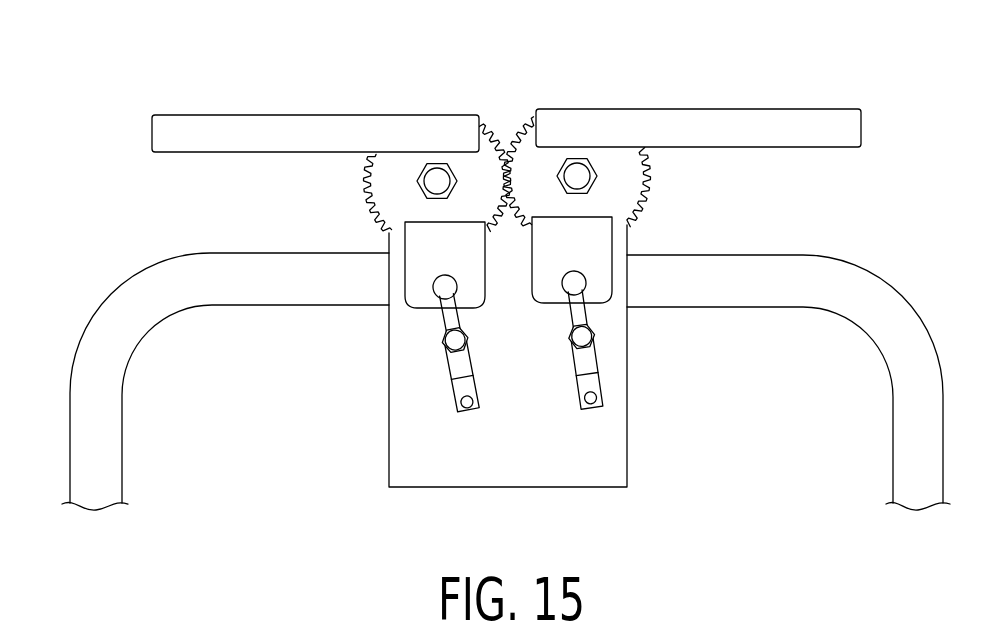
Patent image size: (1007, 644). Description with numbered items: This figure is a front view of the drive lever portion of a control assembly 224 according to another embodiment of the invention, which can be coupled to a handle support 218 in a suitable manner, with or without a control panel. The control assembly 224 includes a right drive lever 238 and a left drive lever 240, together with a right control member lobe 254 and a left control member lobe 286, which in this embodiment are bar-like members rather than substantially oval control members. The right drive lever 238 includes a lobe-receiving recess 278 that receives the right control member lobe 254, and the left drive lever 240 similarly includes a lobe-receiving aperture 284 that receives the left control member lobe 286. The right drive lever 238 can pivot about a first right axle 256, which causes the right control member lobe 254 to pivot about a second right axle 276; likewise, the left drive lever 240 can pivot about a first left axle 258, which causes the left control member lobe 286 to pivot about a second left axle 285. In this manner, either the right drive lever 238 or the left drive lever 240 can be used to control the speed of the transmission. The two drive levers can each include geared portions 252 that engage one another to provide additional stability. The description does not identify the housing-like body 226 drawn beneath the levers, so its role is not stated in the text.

The control assembly 224 is at (828, 80).
The handle support 218 is at (768, 272).
The housing 226 is at (603, 467).
The right drive lever 238 is at (295, 123).
The left drive lever 240 is at (725, 125).
The geared portions 252 is at (532, 165).
The right control member lobe 254 is at (437, 300).
The first right axle 256 is at (437, 181).
The first left axle 258 is at (577, 176).
The second right axle 276 is at (445, 342).
The lobe-receiving recess 278 is at (440, 283).
The lobe-receiving aperture 284 is at (578, 284).
The second left axle 285 is at (592, 342).
The left control member lobe 286 is at (584, 300).